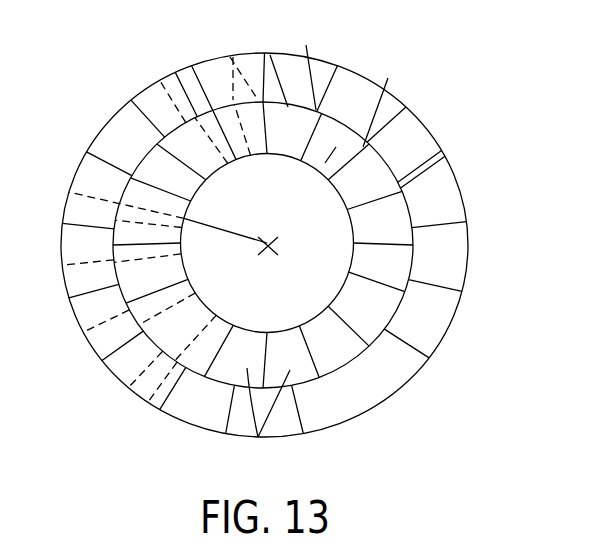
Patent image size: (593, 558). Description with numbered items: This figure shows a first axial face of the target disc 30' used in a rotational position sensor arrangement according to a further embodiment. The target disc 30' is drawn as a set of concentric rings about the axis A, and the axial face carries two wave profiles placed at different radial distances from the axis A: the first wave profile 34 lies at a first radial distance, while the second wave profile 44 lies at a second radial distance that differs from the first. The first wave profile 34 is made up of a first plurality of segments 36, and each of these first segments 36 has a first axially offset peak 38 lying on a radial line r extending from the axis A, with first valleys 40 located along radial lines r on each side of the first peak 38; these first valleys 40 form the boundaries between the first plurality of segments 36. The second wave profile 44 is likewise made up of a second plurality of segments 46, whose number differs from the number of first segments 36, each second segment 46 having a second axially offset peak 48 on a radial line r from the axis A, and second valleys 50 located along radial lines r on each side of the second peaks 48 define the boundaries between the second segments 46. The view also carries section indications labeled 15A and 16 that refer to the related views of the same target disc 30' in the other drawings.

The target disc 30' is at (264, 245).
The first plurality of segments 36 is at (123, 118).
The first valleys 40 is at (73, 220).
The first axially offset peak 38 is at (97, 262).
The second plurality of segments 46 is at (180, 78).
The second axially offset peak 48 is at (266, 53).
The second valleys 50 is at (233, 57).
The second wave profile 44 is at (378, 173).
The first wave profile 34 is at (431, 198).
The rotation direction 16 is at (323, 303).
The section line 15A is at (448, 368).
The radial line r is at (78, 188).
The axis A is at (272, 228).